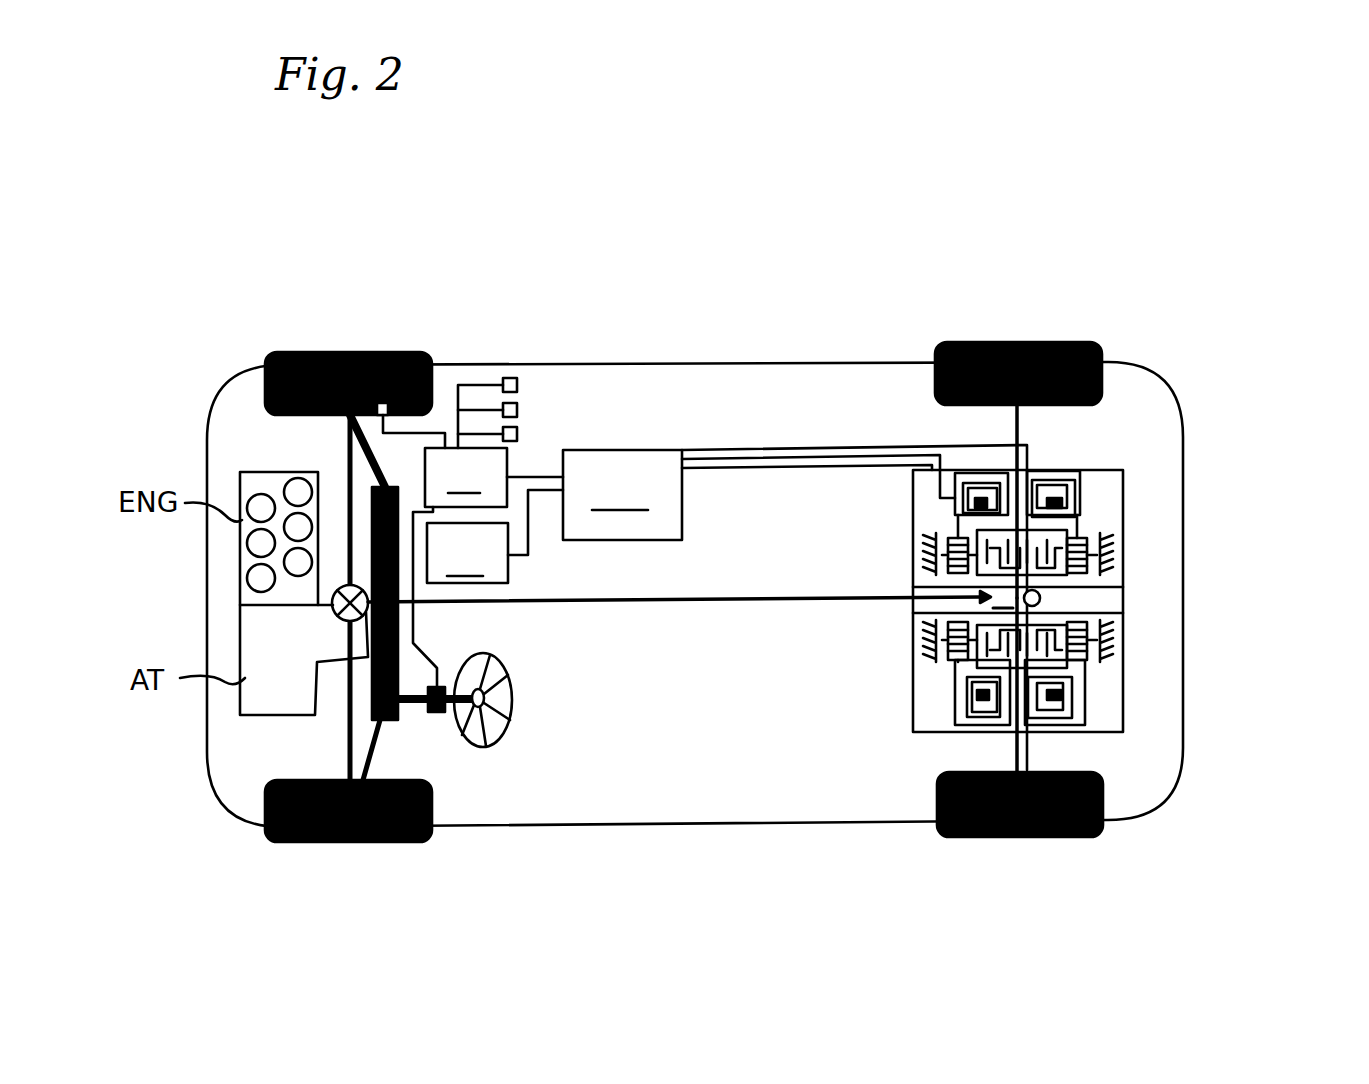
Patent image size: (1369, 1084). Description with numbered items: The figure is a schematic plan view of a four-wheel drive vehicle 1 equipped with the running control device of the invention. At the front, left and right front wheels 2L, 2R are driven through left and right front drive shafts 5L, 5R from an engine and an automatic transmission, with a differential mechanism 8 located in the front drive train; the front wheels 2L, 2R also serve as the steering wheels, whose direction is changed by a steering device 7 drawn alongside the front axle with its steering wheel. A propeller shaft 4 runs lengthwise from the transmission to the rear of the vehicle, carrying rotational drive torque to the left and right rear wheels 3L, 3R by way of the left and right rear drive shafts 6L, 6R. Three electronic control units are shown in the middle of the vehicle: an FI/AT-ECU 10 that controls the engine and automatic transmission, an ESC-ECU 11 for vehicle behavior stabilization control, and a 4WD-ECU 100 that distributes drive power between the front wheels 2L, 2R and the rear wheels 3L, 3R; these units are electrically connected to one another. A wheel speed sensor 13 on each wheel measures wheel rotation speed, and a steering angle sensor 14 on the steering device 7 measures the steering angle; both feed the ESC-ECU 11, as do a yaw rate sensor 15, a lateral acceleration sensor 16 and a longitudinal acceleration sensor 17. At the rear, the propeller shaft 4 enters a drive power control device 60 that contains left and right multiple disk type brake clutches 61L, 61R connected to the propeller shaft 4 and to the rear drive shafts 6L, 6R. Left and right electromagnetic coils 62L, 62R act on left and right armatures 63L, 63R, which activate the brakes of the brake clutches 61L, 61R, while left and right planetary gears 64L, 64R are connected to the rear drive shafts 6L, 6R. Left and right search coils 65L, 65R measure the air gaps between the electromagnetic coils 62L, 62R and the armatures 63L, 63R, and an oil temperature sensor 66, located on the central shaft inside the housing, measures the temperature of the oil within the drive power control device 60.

The four-wheel drive vehicle 1 is at (1188, 250).
The left front wheel 2L is at (360, 352).
The right front wheel 2R is at (355, 842).
The left rear wheel 3L is at (1017, 342).
The right rear wheel 3R is at (1017, 837).
The propeller shaft 4 is at (733, 602).
The left front drive shaft 5L is at (347, 450).
The right front drive shaft 5R is at (352, 748).
The left rear drive shaft 6L is at (1013, 428).
The right rear drive shaft 6R is at (1015, 753).
The steering device 7 is at (400, 622).
The differential mechanism 8 is at (335, 612).
The FI/AT-ECU 10 is at (495, 536).
The ESC-ECU 11 is at (494, 477).
The wheel speed sensor 13 is at (377, 412).
The steering angle sensor 14 is at (437, 712).
The yaw rate sensor 15 is at (517, 385).
The lateral acceleration sensor 16 is at (517, 410).
The longitudinal acceleration sensor 17 is at (517, 434).
The drive power control device 60 is at (910, 730).
The left multiple disk type brake clutch 61L is at (1116, 553).
The right multiple disk type brake clutch 61R is at (1116, 630).
The left electromagnetic coil 62L is at (1092, 497).
The right electromagnetic coil 62R is at (1065, 707).
The left armature 63L is at (1050, 473).
The right armature 63R is at (1057, 720).
The left planetary gear 64L is at (1095, 535).
The right planetary gear 64R is at (1090, 657).
The left search coil 65L is at (952, 506).
The right search coil 65R is at (955, 695).
The oil temperature sensor 66 is at (1042, 600).
The 4WD-ECU 100 is at (795, 607).